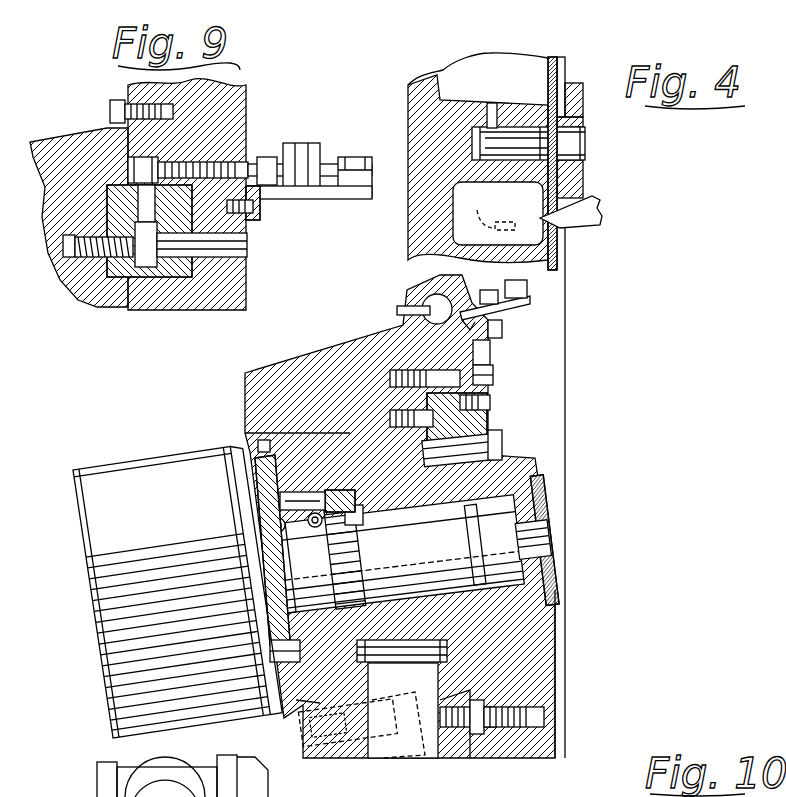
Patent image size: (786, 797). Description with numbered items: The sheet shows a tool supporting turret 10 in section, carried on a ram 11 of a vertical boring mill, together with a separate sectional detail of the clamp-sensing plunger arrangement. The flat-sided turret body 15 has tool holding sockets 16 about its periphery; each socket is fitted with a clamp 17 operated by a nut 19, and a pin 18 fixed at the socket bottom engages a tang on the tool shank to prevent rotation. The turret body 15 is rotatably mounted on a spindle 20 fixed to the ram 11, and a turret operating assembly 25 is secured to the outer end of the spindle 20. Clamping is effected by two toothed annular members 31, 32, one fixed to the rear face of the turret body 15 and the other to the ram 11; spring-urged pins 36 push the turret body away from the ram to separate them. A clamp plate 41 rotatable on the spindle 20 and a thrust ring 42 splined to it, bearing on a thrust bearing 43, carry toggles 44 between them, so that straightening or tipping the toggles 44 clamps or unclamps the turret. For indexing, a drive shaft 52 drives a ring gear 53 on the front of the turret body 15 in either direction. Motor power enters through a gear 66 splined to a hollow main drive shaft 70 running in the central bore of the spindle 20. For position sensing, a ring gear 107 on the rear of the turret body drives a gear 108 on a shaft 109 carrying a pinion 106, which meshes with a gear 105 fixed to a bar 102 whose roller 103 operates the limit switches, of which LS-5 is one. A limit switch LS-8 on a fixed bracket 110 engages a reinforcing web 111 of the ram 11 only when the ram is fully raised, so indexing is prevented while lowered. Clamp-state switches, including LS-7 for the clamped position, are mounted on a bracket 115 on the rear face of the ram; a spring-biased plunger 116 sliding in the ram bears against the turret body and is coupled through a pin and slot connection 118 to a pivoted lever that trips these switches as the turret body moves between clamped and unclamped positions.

In FIG. 4, the tool supporting turret 10 is at (312, 326).
In FIG. 4, the ram 11 is at (556, 662).
In FIG. 9, the turret body 15 is at (53, 145).
In FIG. 4, the turret body 15 is at (363, 350).
In FIG. 4, the tool holding socket 16 is at (440, 743).
In FIG. 4, the clamp 17 is at (388, 747).
In FIG. 4, the pin 18 is at (407, 662).
In FIG. 4, the nut 19 is at (308, 734).
In FIG. 4, the spindle 20 is at (431, 543).
In FIG. 4, the turret operating assembly 25 is at (163, 441).
In FIG. 4, the annular member 31 is at (475, 747).
In FIG. 4, the annular member 32 is at (495, 747).
In FIG. 4, the pin 36 is at (297, 503).
In FIG. 4, the clamp plate 41 is at (260, 495).
In FIG. 4, the thrust ring 42 is at (350, 493).
In FIG. 4, the thrust bearing 43 is at (355, 518).
In FIG. 4, the toggle 44 is at (272, 527).
In FIG. 4, the drive shaft 52 is at (275, 650).
In FIG. 4, the ring gear 53 is at (262, 445).
In FIG. 4, the gear 66 is at (552, 498).
In FIG. 4, the main drive shaft 70 is at (553, 550).
In FIG. 4, the bar 102 is at (505, 372).
In FIG. 4, the roller 103 is at (520, 355).
In FIG. 4, the gear 105 is at (525, 404).
In FIG. 4, the pinion 106 is at (528, 445).
In FIG. 4, the ring gear 107 is at (462, 490).
In FIG. 4, the gear 108 is at (438, 438).
In FIG. 4, the shaft 109 is at (522, 440).
In FIG. 4, the fixed bracket 110 is at (598, 204).
In FIG. 9, the reinforcing web 111 is at (238, 102).
In FIG. 4, the reinforcing web 111 is at (557, 250).
In FIG. 9, the bracket 115 is at (328, 192).
In FIG. 4, the bracket 115 is at (530, 302).
In FIG. 9, the spring-biased plunger 116 is at (231, 165).
In FIG. 9, the pin and slot connection 118 is at (173, 158).
In FIG. 4, the limit switch LS-5 is at (525, 332).
In FIG. 4, the limit switch LS-7 is at (527, 284).
In FIG. 4, the limit switch LS-8 is at (488, 211).